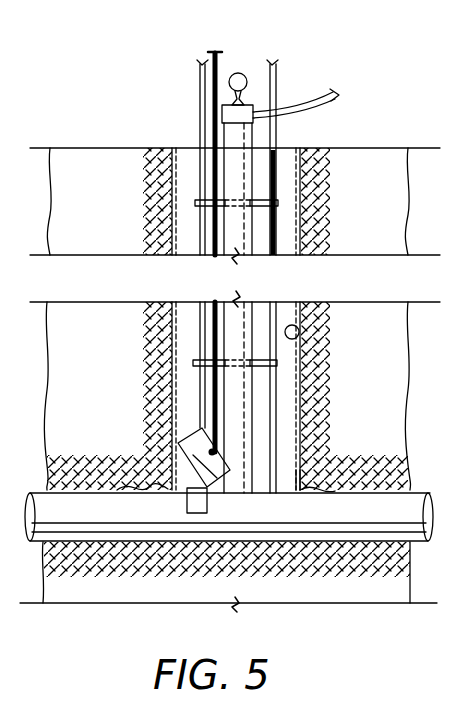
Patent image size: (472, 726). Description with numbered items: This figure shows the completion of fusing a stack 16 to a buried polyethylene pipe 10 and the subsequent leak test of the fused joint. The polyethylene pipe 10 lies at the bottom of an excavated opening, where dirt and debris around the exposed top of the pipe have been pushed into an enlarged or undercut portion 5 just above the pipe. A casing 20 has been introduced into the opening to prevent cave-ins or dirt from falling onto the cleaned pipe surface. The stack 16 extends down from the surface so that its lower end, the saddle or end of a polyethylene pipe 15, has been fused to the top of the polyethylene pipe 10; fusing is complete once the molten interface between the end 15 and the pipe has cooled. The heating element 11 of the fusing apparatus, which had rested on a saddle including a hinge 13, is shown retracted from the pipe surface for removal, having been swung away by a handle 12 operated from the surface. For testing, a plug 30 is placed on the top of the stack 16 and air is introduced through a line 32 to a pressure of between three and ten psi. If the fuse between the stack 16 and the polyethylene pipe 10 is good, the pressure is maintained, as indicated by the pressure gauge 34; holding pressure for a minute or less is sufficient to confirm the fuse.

The undercut portion 5 is at (312, 495).
The polyethylene pipe 10 is at (113, 522).
The heating element 11 is at (190, 440).
The handle 12 is at (213, 383).
The hinge 13 is at (167, 487).
The end of a polyethylene pipe 15 is at (237, 495).
The stack 16 is at (253, 423).
The casing 20 is at (300, 338).
The plug 30 is at (211, 113).
The line 32 is at (313, 101).
The pressure gauge 34 is at (239, 72).